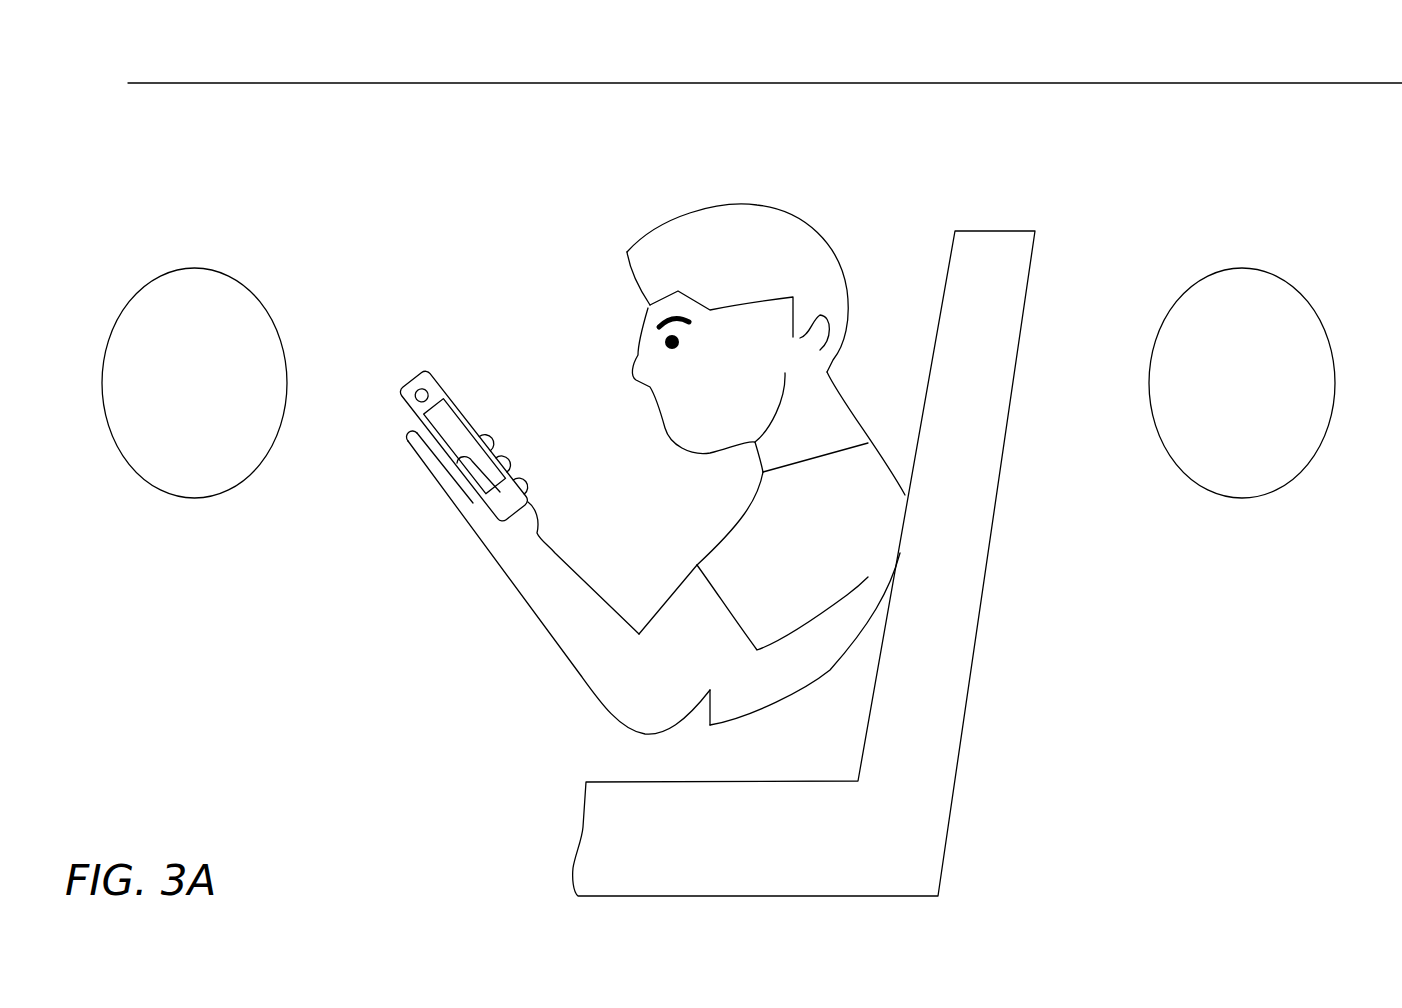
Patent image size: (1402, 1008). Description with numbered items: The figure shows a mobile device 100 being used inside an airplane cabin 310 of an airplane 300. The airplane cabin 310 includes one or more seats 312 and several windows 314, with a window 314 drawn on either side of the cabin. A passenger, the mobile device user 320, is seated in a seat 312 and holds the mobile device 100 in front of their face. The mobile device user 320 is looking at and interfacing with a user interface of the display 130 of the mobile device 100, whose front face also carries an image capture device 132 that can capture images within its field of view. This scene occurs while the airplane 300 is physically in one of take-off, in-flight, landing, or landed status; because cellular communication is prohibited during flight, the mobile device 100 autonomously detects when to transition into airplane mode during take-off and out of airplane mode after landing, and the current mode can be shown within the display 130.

The airplane 300 is at (206, 83).
The airplane cabin 310 is at (357, 127).
The seat 312 is at (1000, 231).
The window 314 is at (1245, 268).
The mobile device user 320 is at (736, 205).
The mobile device 100 is at (477, 395).
The display 130 is at (447, 433).
The image capture device 132 is at (428, 377).